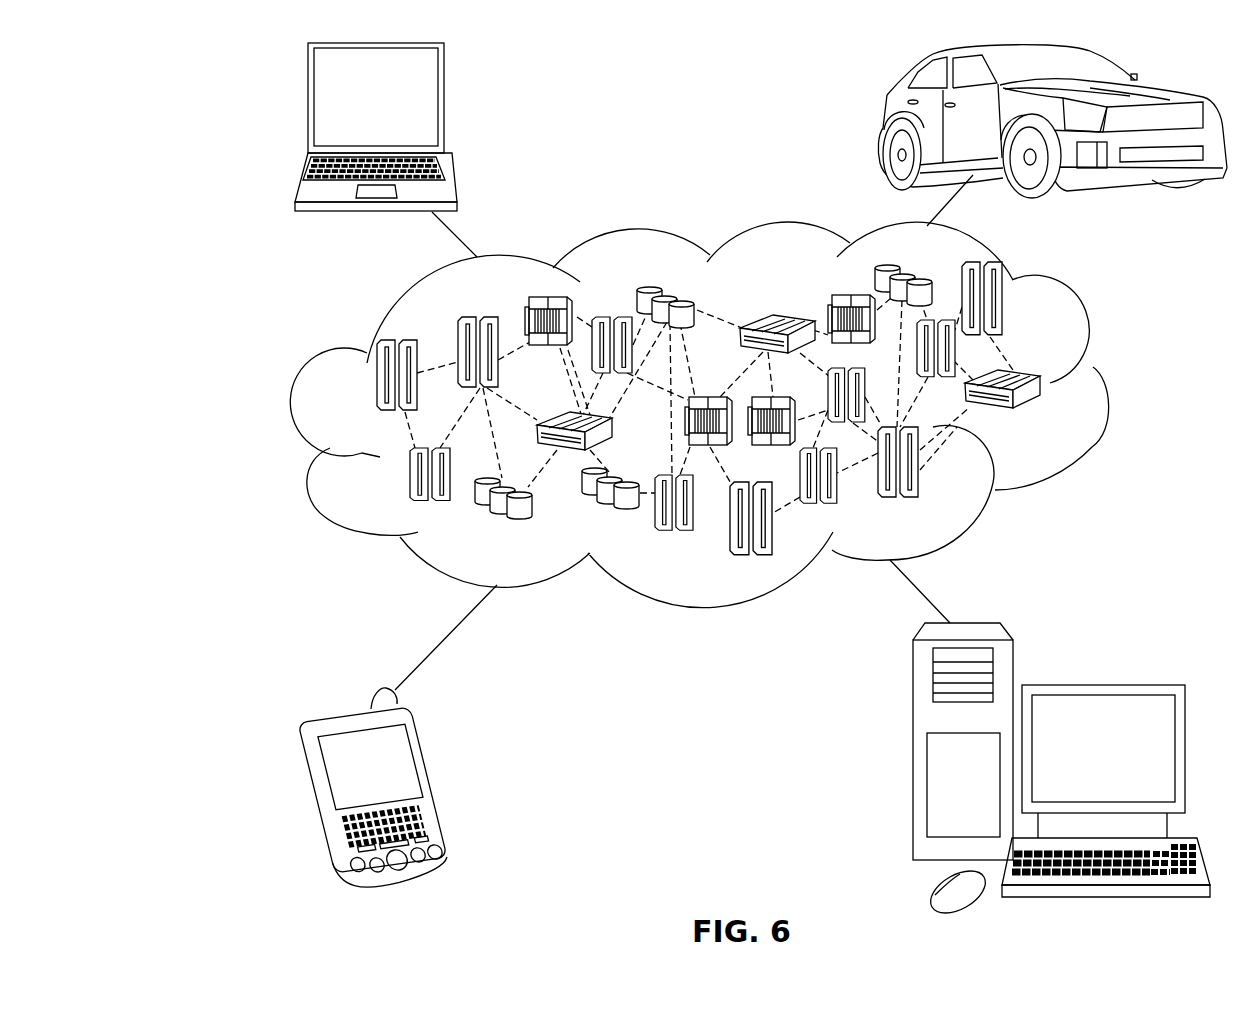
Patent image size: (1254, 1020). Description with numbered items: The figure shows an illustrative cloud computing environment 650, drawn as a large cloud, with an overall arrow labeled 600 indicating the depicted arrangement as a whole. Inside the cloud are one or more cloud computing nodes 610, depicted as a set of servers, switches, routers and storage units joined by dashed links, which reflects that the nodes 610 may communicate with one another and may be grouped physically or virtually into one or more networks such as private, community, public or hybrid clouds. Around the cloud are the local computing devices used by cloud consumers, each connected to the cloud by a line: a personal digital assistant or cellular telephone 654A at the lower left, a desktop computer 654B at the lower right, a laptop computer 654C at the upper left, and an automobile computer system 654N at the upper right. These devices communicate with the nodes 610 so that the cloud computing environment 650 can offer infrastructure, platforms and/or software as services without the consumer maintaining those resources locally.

The system 600 is at (191, 66).
The cloud computing nodes 610 is at (1058, 421).
The cloud computing environment 650 is at (1093, 371).
The personal digital assistant or cellular telephone 654A is at (437, 781).
The desktop computer 654B is at (1100, 685).
The laptop computer 654C is at (444, 105).
The automobile computer system 654N is at (878, 118).